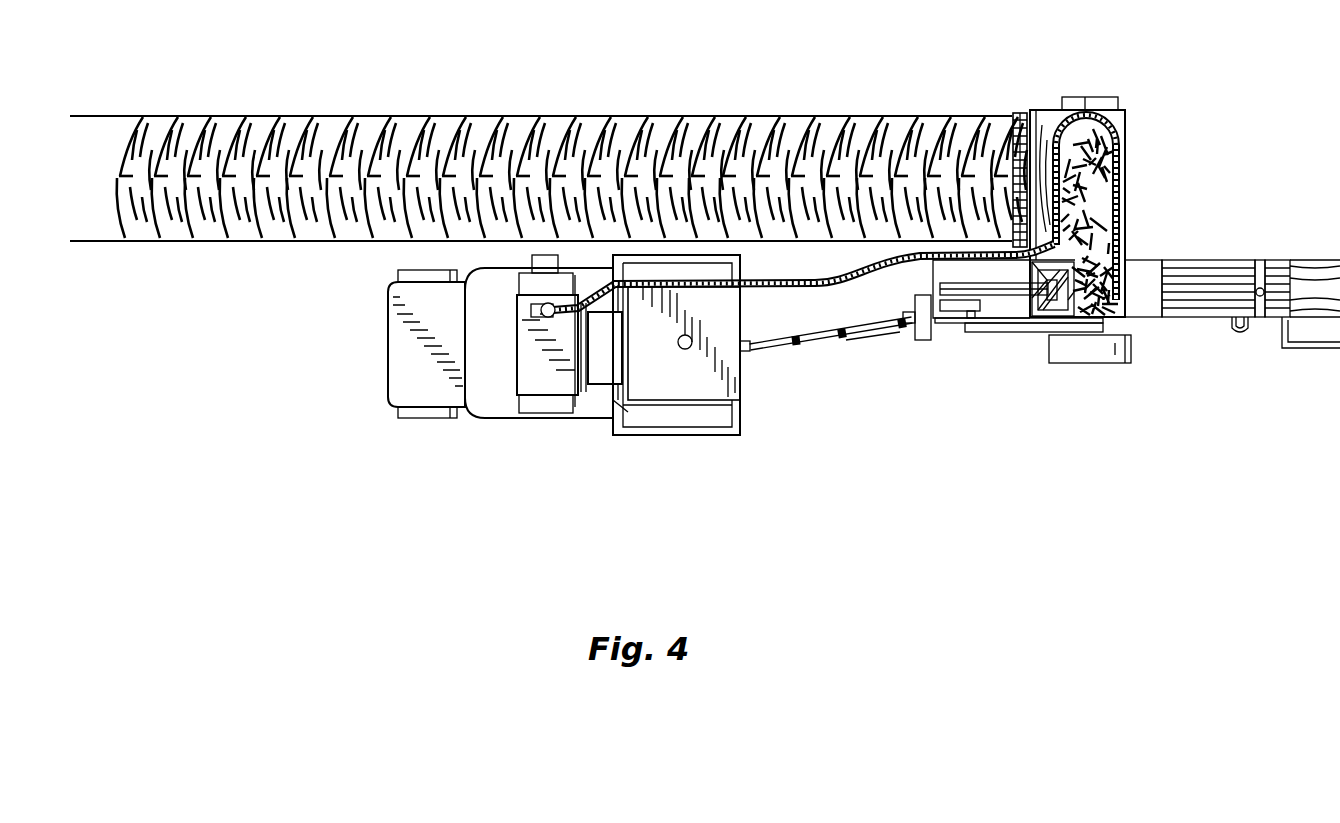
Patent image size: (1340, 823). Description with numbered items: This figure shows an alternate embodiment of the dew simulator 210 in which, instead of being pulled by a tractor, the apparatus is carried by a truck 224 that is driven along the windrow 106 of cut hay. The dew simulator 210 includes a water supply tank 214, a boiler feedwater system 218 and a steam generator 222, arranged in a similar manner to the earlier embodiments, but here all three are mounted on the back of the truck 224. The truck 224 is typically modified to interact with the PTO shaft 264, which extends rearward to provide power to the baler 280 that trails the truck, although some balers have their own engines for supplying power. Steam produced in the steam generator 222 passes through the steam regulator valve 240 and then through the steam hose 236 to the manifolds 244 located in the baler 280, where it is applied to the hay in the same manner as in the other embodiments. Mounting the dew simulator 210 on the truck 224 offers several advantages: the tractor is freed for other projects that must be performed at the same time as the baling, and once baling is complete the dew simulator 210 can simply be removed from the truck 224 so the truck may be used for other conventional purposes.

The windrow 106 is at (590, 116).
The baler 280 is at (1044, 96).
The manifolds 244 is at (1010, 172).
The steam hose 236 is at (762, 290).
The PTO shaft 264 is at (857, 330).
The dew simulator 210 is at (568, 440).
The truck 224 is at (371, 336).
The steam generator 222 is at (545, 378).
The steam regulator valve 240 is at (537, 318).
The boiler feedwater system 218 is at (602, 372).
The water supply tank 214 is at (703, 395).